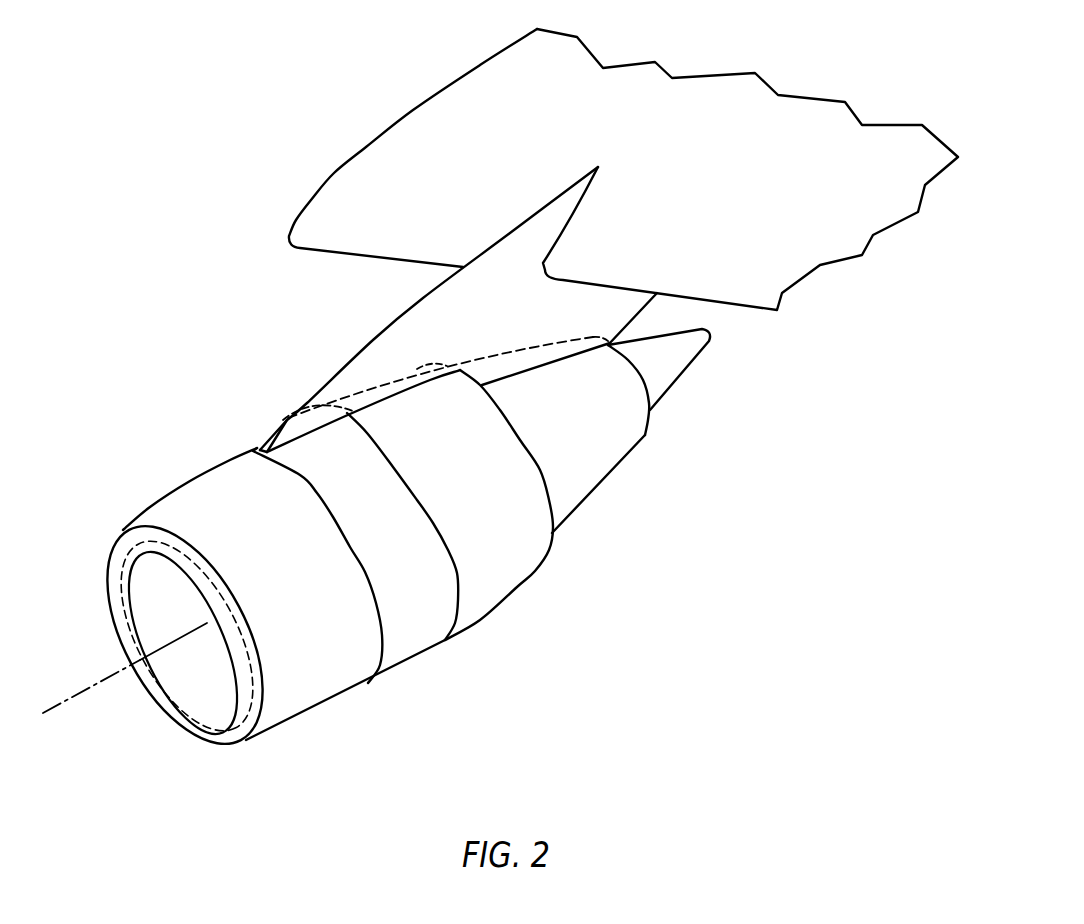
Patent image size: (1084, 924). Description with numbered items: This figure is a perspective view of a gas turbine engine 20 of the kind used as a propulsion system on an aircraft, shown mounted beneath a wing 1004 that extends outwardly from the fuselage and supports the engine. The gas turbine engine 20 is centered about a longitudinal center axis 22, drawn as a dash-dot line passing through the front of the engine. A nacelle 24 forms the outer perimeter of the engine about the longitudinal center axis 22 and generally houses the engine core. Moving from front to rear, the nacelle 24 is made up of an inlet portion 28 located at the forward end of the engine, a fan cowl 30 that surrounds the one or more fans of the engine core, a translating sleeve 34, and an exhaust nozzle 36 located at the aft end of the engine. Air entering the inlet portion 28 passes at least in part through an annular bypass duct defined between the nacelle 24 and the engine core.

The wing 1004 is at (450, 117).
The gas turbine engine 20 is at (384, 501).
The longitudinal center axis 22 is at (55, 713).
The nacelle 24 is at (331, 742).
The inlet portion 28 is at (159, 470).
The fan cowl 30 is at (419, 687).
The translating sleeve 34 is at (553, 610).
The exhaust nozzle 36 is at (636, 483).